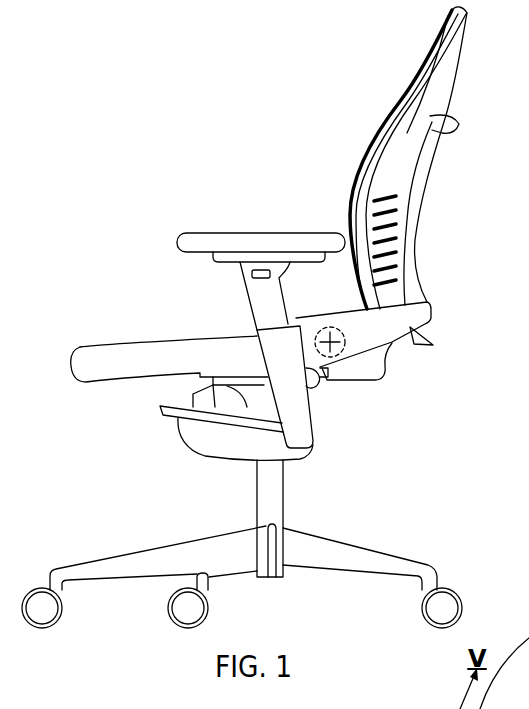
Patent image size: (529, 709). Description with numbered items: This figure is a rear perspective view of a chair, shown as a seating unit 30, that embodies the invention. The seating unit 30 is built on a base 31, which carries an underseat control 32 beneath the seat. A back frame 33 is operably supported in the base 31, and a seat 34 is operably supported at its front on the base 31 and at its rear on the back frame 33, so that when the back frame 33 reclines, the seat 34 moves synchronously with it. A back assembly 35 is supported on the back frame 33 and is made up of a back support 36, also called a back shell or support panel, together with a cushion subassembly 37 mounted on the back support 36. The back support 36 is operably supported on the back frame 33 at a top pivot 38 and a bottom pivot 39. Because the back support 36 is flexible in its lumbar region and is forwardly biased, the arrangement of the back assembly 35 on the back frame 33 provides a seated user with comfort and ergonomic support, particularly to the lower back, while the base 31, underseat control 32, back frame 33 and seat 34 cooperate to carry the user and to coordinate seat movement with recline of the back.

The seating unit 30 is at (125, 168).
The base 31 is at (72, 563).
The underseat control 32 is at (185, 445).
The back frame 33 is at (440, 302).
The seat 34 is at (97, 343).
The back assembly 35 is at (417, 50).
The back support 36 is at (457, 60).
The cushion subassembly 37 is at (393, 107).
The top pivot 38 is at (432, 118).
The bottom pivot 39 is at (345, 341).